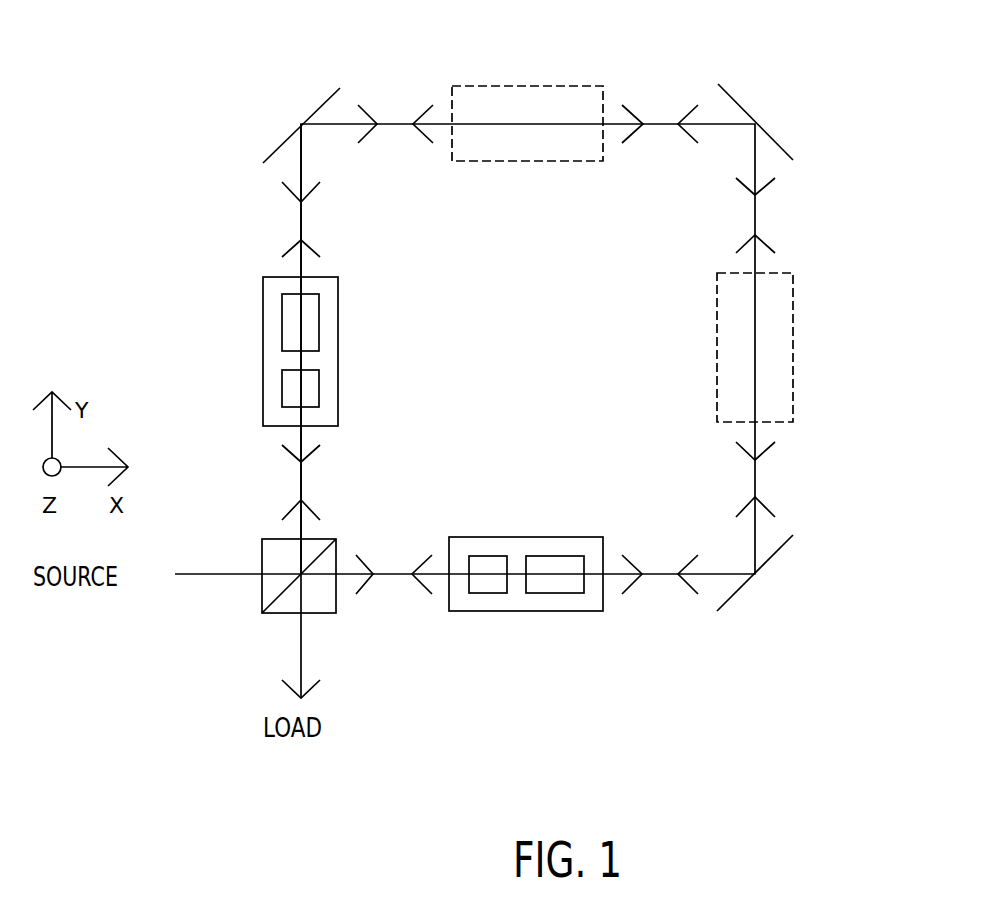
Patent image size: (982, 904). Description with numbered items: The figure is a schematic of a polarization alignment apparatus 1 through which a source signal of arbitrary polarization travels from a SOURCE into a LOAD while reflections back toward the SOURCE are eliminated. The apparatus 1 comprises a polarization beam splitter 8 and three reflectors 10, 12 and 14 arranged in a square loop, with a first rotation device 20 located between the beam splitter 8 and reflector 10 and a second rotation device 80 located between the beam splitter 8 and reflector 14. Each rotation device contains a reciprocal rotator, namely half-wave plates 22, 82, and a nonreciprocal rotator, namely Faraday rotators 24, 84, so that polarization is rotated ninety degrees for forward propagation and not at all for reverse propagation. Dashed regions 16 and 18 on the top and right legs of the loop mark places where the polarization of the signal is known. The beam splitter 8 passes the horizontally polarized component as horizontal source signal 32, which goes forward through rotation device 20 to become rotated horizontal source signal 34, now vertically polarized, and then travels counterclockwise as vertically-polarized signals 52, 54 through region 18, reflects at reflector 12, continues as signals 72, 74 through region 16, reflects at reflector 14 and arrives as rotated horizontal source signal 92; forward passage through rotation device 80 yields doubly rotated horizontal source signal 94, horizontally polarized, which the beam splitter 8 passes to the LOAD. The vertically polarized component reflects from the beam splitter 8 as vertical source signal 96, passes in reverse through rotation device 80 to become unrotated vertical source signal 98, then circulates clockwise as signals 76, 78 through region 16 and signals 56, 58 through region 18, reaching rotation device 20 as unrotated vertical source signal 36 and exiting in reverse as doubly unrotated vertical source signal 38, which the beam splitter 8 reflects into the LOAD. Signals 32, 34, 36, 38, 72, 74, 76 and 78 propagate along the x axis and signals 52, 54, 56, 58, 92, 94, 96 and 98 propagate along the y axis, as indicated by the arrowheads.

The polarization alignment apparatus 1 is at (158, 193).
The polarization beam splitter 8 is at (298, 593).
The reflector 10 is at (767, 573).
The reflector 12 is at (768, 122).
The reflector 14 is at (292, 125).
The region 16 is at (525, 86).
The region 18 is at (793, 347).
The first rotation device 20 is at (462, 611).
The half-wave plate 22 is at (488, 593).
The Faraday rotator 24 is at (543, 593).
The horizontal source signal 32 is at (360, 592).
The rotated horizontal source signal 34 is at (628, 591).
The unrotated vertical source signal 36 is at (684, 591).
The doubly unrotated vertical source signal 38 is at (417, 592).
The vertically-polarized signal 52 is at (772, 508).
The vertically-polarized signal 54 is at (773, 245).
The vertically-polarized signal 56 is at (773, 188).
The vertically-polarized signal 58 is at (772, 452).
The vertically-polarized signal 72 is at (684, 108).
The vertically-polarized signal 74 is at (419, 108).
The vertically-polarized signal 76 is at (362, 108).
The vertically-polarized signal 78 is at (628, 108).
The second rotation device 80 is at (263, 415).
The half-wave plate 82 is at (282, 388).
The Faraday rotator 84 is at (282, 322).
The rotated horizontal source signal 92 is at (287, 193).
The doubly rotated horizontal source signal 94 is at (287, 455).
The vertical source signal 96 is at (286, 512).
The unrotated vertical source signal 98 is at (287, 248).